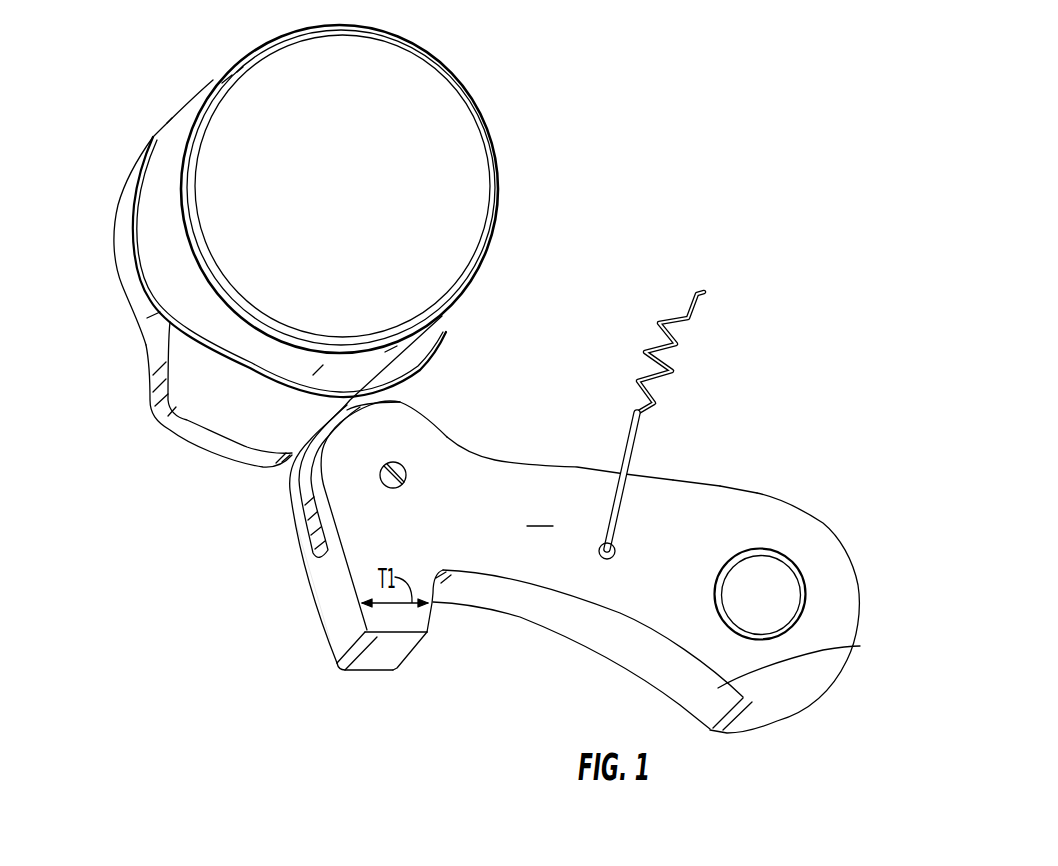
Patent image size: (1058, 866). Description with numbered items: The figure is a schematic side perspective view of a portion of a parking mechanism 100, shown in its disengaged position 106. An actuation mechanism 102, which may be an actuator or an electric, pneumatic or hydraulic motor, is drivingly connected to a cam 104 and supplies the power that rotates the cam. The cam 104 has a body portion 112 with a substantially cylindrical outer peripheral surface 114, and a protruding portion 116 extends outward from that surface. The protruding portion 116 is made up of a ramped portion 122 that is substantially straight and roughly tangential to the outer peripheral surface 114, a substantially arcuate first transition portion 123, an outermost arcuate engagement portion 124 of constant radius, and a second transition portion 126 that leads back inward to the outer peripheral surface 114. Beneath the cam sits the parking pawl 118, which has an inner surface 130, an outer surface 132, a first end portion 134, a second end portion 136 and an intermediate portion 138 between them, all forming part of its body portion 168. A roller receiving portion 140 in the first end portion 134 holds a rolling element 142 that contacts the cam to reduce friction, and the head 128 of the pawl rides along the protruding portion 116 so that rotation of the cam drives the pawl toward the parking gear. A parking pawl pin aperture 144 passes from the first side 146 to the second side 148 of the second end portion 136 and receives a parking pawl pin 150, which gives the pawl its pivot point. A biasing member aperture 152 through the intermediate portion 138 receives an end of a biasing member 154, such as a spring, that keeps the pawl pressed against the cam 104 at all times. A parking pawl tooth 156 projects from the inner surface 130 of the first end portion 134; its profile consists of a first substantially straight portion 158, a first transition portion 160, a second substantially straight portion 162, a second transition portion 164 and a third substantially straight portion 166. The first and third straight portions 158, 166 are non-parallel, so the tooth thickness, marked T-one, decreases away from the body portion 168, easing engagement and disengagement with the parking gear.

The parking mechanism 100 is at (662, 112).
The actuation mechanism 102 is at (417, 87).
The cam 104 is at (177, 370).
The disengaged position 106 is at (682, 200).
The body portion 112 is at (123, 243).
The outer peripheral surface 114 is at (123, 273).
The protruding portion 116 is at (153, 410).
The parking pawl 118 is at (540, 512).
The ramped portion 122 is at (335, 450).
The first transition portion 123 is at (325, 488).
The engagement portion 124 is at (185, 435).
The second transition portion 126 is at (150, 387).
The head 128 is at (452, 450).
The inner surface 130 is at (857, 643).
The outer surface 132 is at (703, 483).
The first end portion 134 is at (427, 367).
The second end portion 136 is at (827, 520).
The intermediate portion 138 is at (677, 477).
The roller receiving portion 140 is at (403, 462).
The rolling element 142 is at (303, 503).
The parking pawl pin aperture 144 is at (807, 580).
The first side 146 is at (600, 650).
The second side 148 is at (647, 622).
The parking pawl pin 150 is at (777, 583).
The biasing member aperture 152 is at (613, 543).
The biasing member 154 is at (687, 330).
The parking pawl tooth 156 is at (336, 637).
The first substantially straight portion 158 is at (326, 608).
The first transition portion 160 is at (340, 670).
The second substantially straight portion 162 is at (377, 663).
The second transition portion 164 is at (417, 663).
The third substantially straight portion 166 is at (436, 612).
The body portion 168 is at (573, 473).